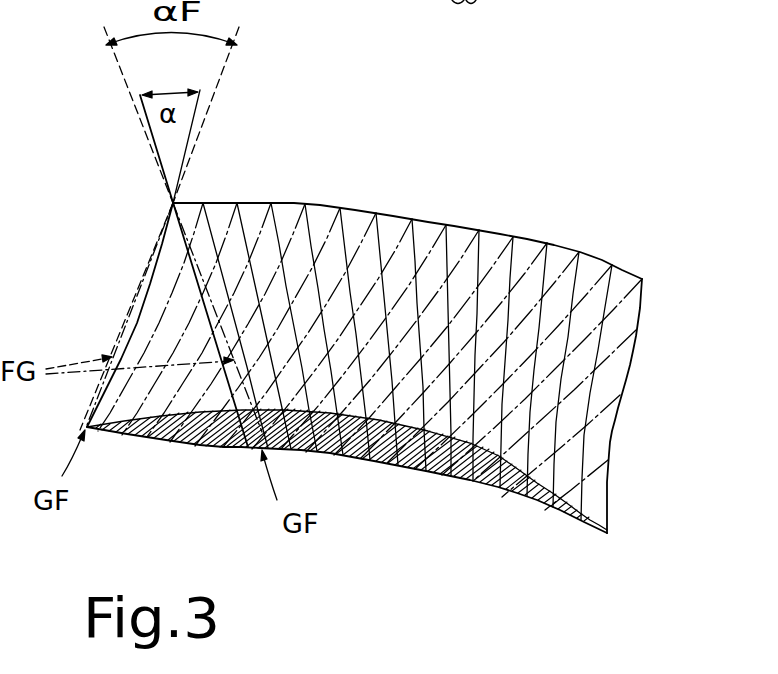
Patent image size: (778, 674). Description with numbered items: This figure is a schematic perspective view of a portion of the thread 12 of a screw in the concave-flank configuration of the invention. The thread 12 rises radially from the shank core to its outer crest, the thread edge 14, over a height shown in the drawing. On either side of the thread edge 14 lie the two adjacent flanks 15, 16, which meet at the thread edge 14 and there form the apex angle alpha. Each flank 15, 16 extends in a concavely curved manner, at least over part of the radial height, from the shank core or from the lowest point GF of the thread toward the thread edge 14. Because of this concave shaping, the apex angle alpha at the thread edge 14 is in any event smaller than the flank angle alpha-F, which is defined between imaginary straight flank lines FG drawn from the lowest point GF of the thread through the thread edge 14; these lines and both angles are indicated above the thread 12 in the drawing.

The thread 12 is at (632, 326).
The thread edge 14 is at (428, 211).
The flank 15 is at (132, 326).
The flank 16 is at (598, 421).